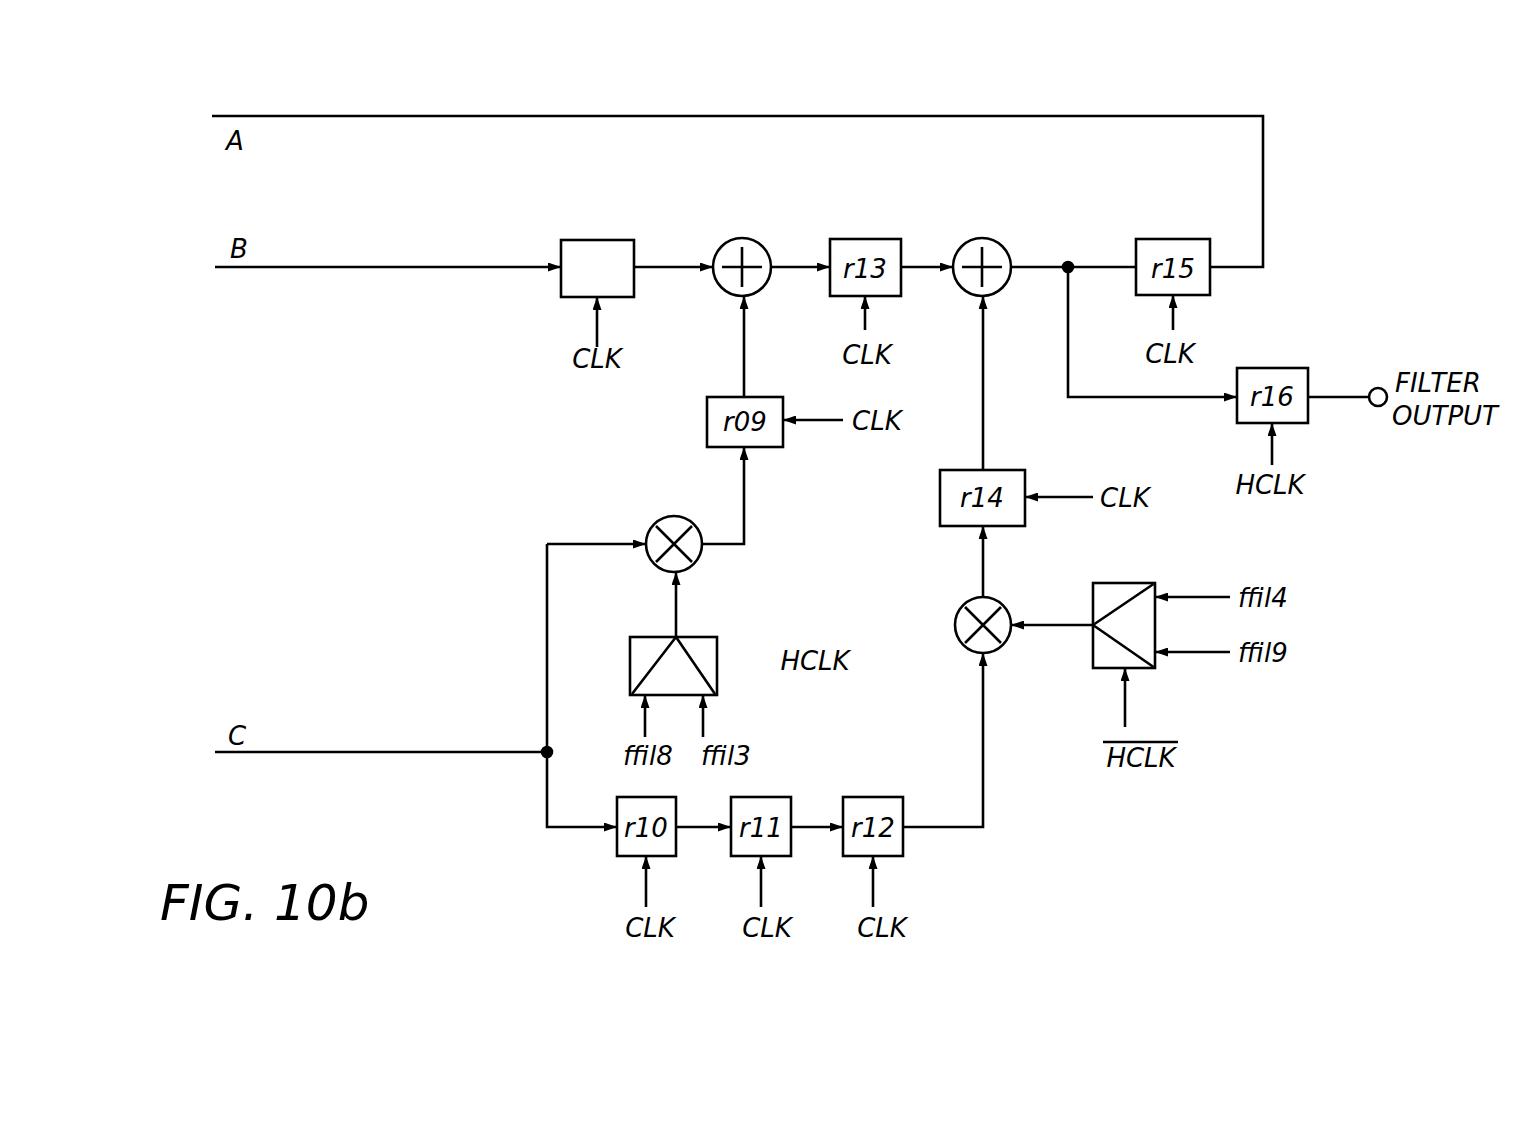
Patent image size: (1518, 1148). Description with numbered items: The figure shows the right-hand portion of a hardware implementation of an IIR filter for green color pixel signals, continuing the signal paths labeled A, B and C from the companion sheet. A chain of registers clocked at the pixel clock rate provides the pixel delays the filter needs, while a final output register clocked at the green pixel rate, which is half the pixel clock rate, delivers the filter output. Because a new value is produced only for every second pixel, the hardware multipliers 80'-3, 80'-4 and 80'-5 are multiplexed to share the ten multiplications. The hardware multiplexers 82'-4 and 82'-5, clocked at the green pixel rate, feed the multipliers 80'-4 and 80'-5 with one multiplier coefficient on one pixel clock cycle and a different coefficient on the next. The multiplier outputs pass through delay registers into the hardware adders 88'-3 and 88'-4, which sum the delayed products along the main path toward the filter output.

The hardware multiplier 80'-3 is at (611, 242).
The hardware adder 88'-3 is at (763, 245).
The hardware adder 88'-4 is at (1004, 245).
The hardware multiplier 80'-4 is at (684, 520).
The hardware multiplexer 82'-4 is at (702, 645).
The hardware multiplier 80'-5 is at (955, 614).
The hardware multiplexer 82'-5 is at (1123, 611).